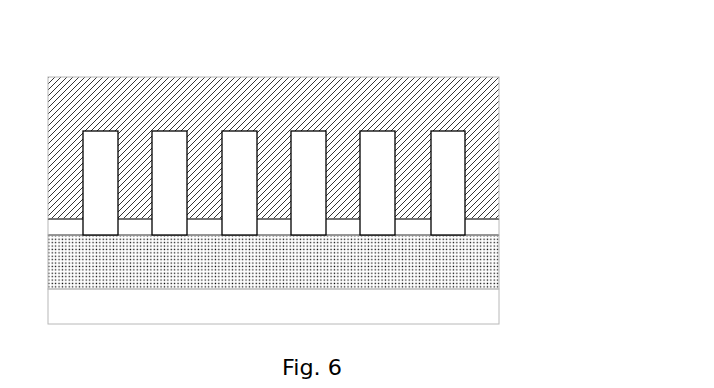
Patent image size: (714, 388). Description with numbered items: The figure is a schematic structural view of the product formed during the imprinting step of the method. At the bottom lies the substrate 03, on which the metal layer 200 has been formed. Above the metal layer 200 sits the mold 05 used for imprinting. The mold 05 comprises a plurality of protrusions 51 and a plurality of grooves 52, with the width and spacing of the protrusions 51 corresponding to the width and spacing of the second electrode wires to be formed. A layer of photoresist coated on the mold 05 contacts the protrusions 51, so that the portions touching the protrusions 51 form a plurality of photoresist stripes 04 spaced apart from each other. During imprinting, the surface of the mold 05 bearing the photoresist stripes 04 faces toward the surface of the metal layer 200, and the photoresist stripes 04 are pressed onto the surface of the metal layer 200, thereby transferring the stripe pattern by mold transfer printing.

The substrate 03 is at (482, 304).
The metal layer 200 is at (482, 260).
The photoresist stripes 04 is at (482, 225).
The mold 05 is at (460, 96).
The protrusions 51 is at (482, 182).
The grooves 52 is at (460, 186).